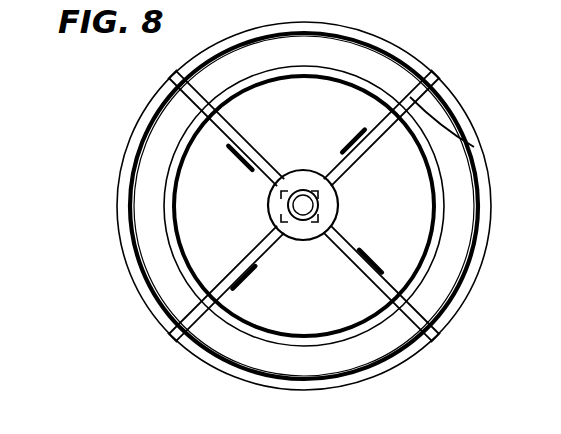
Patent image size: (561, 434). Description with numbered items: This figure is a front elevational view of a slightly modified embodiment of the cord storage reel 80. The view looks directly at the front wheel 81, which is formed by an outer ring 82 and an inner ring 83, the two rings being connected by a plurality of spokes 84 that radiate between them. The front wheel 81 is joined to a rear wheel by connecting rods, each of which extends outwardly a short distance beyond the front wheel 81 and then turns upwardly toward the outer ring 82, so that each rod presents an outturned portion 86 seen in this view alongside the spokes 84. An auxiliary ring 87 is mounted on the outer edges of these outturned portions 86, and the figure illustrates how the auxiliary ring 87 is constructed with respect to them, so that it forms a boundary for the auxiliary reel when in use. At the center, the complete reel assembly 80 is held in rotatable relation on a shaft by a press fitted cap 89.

The cord storage reel 80 is at (441, 56).
The front wheel 81 is at (378, 38).
The outer ring 82 is at (211, 359).
The inner ring 83 is at (328, 202).
The spokes 84 is at (263, 148).
The outturned portion 86 is at (378, 128).
The auxiliary ring 87 is at (163, 223).
The press fitted cap 89 is at (303, 210).